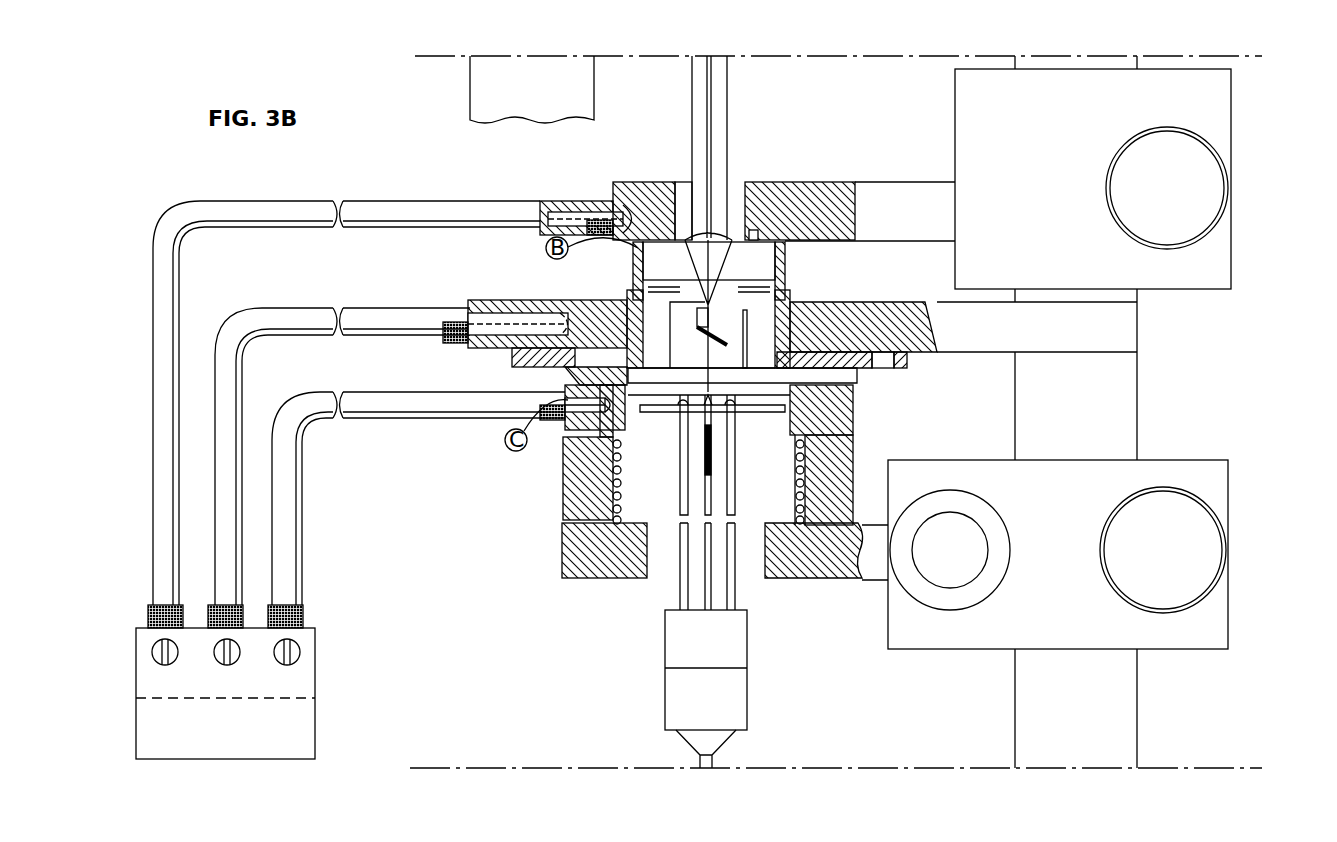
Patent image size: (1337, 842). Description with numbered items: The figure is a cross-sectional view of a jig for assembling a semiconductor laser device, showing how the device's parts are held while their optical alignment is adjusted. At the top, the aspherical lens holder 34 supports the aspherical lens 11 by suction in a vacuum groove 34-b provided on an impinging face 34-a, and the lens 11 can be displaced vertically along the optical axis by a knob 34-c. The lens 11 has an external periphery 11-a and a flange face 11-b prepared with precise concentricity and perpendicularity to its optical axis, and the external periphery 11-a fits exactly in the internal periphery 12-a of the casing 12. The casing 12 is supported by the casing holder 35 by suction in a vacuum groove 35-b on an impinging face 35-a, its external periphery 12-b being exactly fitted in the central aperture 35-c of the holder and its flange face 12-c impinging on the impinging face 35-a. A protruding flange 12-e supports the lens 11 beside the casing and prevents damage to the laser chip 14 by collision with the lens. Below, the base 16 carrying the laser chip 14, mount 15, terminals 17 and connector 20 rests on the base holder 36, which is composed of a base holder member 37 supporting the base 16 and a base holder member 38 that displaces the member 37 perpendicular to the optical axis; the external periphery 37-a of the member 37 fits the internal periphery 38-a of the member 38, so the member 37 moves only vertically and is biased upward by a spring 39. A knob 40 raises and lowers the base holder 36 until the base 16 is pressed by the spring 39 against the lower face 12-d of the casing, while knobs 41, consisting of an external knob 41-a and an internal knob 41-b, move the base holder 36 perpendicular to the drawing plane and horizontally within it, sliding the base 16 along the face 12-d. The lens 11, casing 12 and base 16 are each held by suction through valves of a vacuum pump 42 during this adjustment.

The aspherical lens 11 is at (738, 262).
The external periphery of the aspherical lens 11-a is at (782, 214).
The flange face of the aspherical lens 11-b is at (752, 238).
The casing 12 is at (866, 367).
The internal periphery of the casing 12-a is at (782, 262).
The external periphery of the casing 12-b is at (792, 328).
The flange face of the casing 12-c is at (905, 345).
The lower face of the casing 12-d is at (562, 370).
The protruding flange 12-e is at (780, 292).
The laser chip 14 is at (708, 302).
The mount 15 is at (686, 340).
The base 16 is at (850, 378).
The terminals 17 is at (680, 450).
The connector 20 is at (742, 652).
The aspherical lens holder 34 is at (1258, 69).
The impinging face of the lens holder 34-a is at (640, 264).
The vacuum groove of the lens holder 34-b is at (668, 212).
The knob of the lens holder 34-c is at (1140, 143).
The casing holder 35 is at (1137, 333).
The impinging face of the casing holder 35-a is at (512, 358).
The vacuum groove of the casing holder 35-b is at (560, 335).
The central aperture of the casing holder 35-c is at (640, 290).
The base holder 36 is at (1243, 460).
The base holder member 37 is at (846, 421).
The external periphery of the base holder member 37-a is at (586, 468).
The base holder member 38 is at (808, 575).
The internal periphery of the base holder member 38-a is at (600, 512).
The spring 39 is at (620, 516).
The knob 40 is at (1112, 560).
The knobs 41 is at (1022, 632).
The external knob 41-a is at (960, 592).
The internal knob 41-b is at (940, 582).
The vacuum pump 42 is at (306, 722).